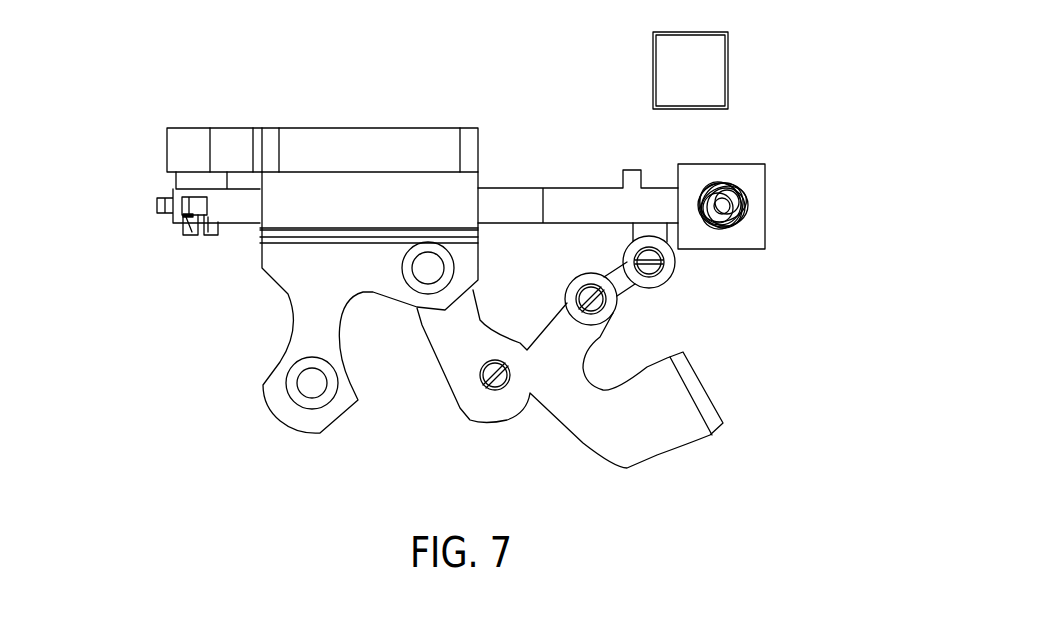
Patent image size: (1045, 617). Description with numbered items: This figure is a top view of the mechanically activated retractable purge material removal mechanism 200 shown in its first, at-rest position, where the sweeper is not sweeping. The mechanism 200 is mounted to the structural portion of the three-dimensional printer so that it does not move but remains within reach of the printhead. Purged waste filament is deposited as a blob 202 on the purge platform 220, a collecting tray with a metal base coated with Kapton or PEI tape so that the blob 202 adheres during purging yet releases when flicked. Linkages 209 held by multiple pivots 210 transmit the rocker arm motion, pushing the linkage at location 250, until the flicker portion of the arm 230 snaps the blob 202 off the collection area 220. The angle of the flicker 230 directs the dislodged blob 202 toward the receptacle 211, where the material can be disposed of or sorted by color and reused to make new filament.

The mechanically activated retractable purge material removal mechanism 200 is at (45, 3).
The blob 202 is at (733, 188).
The linkages 209 is at (627, 283).
The pivots 210 is at (660, 263).
The receptacle 211 is at (653, 70).
The purge platform 220 is at (757, 202).
The flicker arm 230 is at (672, 406).
The linkage location 250 is at (325, 420).